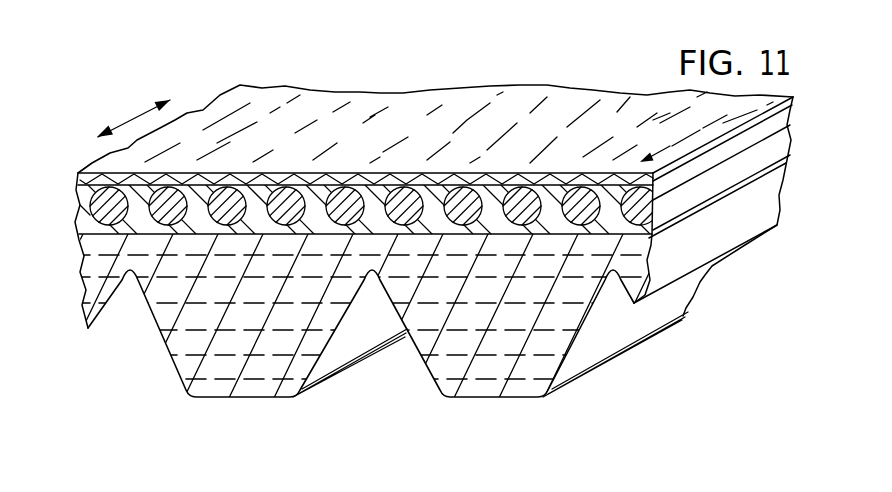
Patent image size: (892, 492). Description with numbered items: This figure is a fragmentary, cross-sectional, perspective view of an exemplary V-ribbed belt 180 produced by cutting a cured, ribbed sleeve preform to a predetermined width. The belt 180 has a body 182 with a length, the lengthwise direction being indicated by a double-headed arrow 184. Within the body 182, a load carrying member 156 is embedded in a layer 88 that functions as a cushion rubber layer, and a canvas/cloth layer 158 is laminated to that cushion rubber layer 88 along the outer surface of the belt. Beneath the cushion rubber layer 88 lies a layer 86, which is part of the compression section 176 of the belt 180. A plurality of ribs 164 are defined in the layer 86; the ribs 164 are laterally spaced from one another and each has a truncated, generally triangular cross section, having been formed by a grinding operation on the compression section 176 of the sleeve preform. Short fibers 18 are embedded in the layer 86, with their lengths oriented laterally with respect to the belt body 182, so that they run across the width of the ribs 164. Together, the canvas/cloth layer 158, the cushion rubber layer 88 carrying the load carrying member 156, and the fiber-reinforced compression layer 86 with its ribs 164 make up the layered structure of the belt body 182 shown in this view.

The short fibers 18 is at (280, 327).
The layer 86 is at (327, 318).
The cushion rubber layer 88 is at (82, 262).
The load carrying member 156 is at (394, 173).
The canvas/cloth layer 158 is at (620, 110).
The ribs 164 is at (190, 370).
The compression section 176 is at (162, 344).
The V-ribbed belt 180 is at (784, 128).
The body 182 is at (70, 304).
The double-headed arrow 184 is at (140, 117).